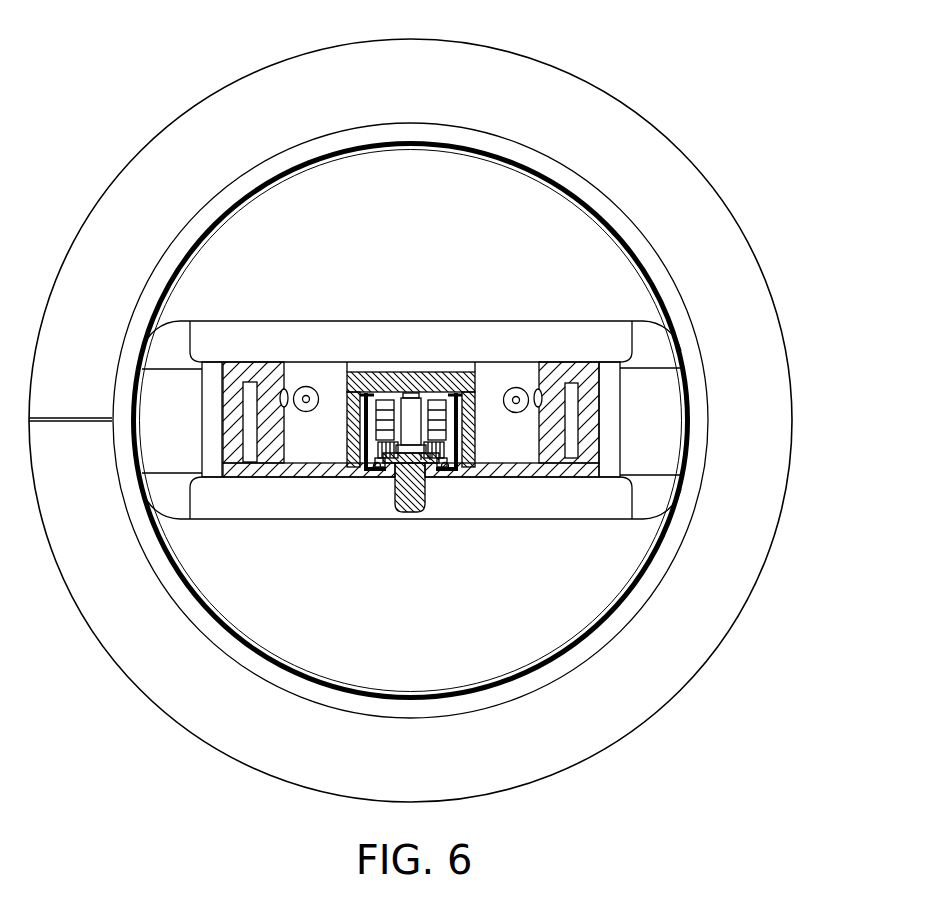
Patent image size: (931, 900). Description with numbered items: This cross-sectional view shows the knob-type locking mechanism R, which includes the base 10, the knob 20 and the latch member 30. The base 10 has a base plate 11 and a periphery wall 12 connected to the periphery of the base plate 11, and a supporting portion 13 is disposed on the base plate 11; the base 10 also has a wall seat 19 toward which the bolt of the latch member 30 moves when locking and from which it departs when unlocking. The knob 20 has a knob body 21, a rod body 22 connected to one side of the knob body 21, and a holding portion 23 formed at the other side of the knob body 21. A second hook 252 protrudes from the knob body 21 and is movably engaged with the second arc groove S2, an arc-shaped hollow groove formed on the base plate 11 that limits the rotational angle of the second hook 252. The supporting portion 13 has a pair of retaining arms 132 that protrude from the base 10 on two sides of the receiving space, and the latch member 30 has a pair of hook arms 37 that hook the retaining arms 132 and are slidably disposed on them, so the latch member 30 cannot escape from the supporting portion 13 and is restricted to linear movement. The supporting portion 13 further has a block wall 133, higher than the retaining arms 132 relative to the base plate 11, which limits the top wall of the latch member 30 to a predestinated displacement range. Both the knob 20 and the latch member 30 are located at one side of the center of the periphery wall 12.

The knob-type locking mechanism R is at (706, 81).
The base 10 is at (711, 172).
The wall seat 19 is at (146, 161).
The base plate 11 is at (508, 470).
The periphery wall 12 is at (555, 426).
The supporting portion 13 is at (382, 349).
The retaining arms 132 is at (362, 437).
The block wall 133 is at (363, 380).
The latch member 30 is at (492, 384).
The rod body 22 is at (414, 393).
The hook arms 37 is at (377, 396).
The knob body 21 is at (397, 463).
The second hook 252 is at (476, 442).
The knob 20 is at (384, 546).
The holding portion 23 is at (405, 500).
The second arc groove S2 is at (429, 458).